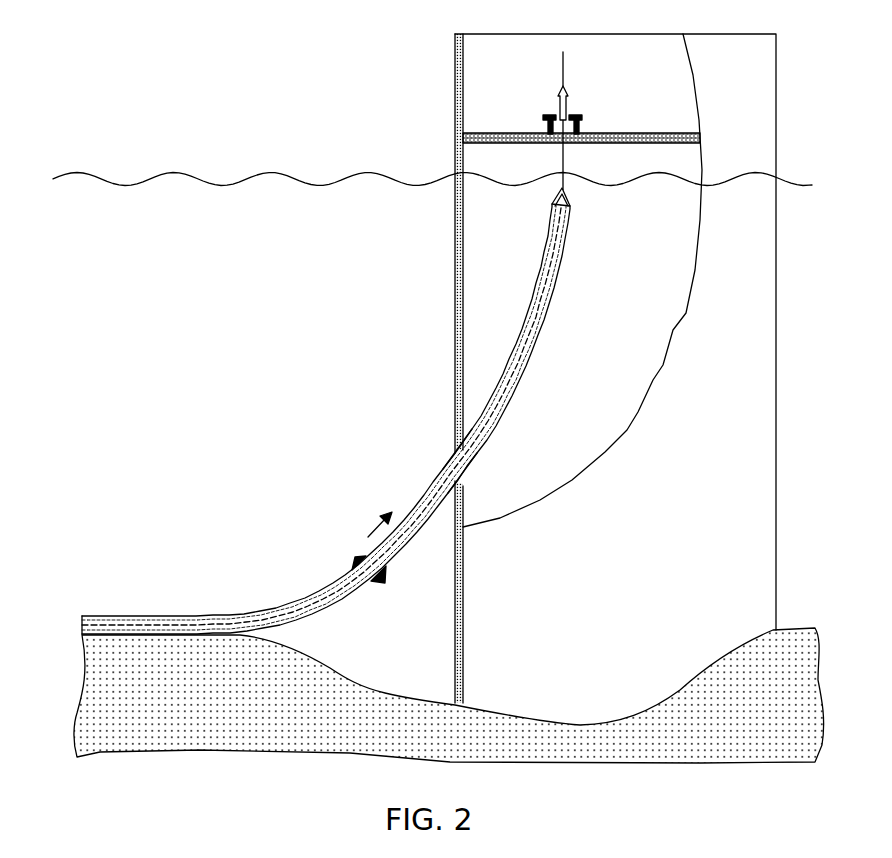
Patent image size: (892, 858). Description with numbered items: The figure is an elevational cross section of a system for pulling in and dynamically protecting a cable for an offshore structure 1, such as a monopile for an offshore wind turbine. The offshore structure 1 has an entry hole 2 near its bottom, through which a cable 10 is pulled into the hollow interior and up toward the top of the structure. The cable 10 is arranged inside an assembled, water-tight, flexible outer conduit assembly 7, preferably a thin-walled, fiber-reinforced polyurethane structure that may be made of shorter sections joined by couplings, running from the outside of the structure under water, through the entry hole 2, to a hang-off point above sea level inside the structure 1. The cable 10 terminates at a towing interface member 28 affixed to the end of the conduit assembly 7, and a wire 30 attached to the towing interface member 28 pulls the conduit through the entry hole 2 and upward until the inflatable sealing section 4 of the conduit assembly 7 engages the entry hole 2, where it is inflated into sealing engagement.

The offshore structure 1 is at (776, 305).
The entry hole 2 is at (461, 480).
The inflatable sealing section 4 is at (397, 565).
The flexible outer conduit assembly 7 is at (545, 325).
The cable 10 is at (82, 622).
The towing interface member 28 is at (568, 198).
The wire 30 is at (563, 157).